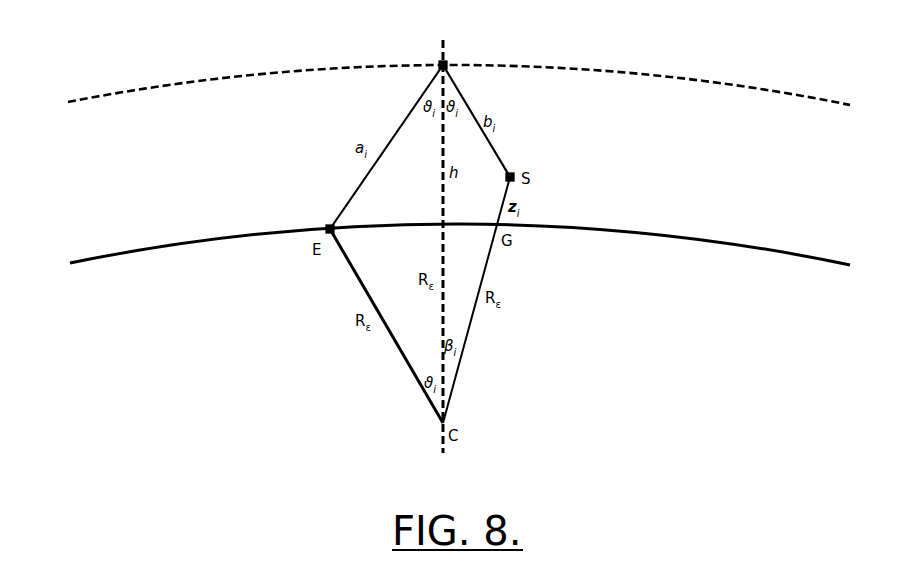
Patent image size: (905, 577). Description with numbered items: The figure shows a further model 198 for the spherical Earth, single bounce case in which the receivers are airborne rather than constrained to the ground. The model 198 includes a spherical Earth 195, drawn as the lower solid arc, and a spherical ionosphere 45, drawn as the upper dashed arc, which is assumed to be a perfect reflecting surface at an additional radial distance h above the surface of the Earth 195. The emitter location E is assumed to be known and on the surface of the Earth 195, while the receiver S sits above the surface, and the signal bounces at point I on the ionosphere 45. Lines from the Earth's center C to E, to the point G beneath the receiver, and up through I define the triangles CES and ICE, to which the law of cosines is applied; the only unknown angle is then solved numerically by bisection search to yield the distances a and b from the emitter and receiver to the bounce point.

The ionosphere 45 is at (688, 83).
The spherical Earth 195 is at (745, 247).
The model 198 is at (115, 67).